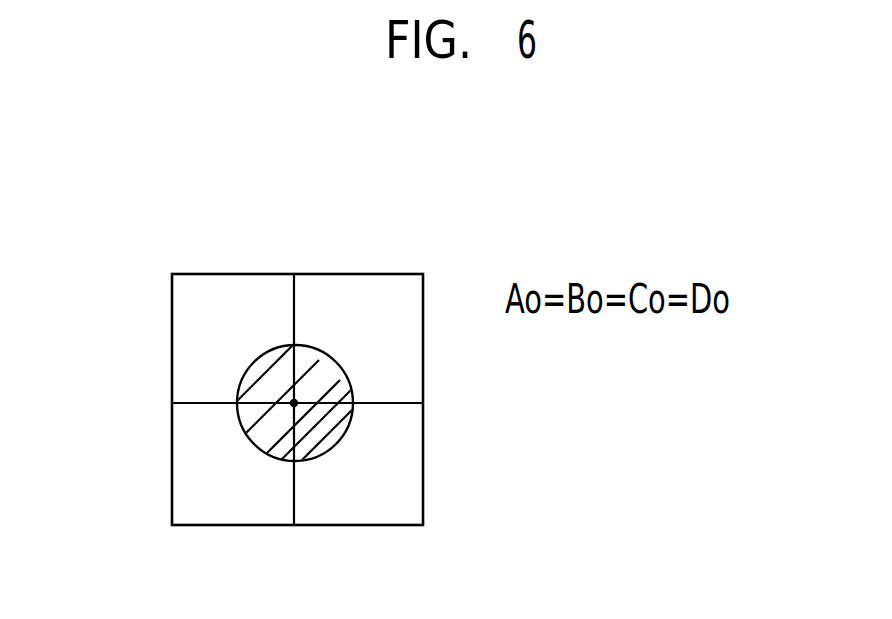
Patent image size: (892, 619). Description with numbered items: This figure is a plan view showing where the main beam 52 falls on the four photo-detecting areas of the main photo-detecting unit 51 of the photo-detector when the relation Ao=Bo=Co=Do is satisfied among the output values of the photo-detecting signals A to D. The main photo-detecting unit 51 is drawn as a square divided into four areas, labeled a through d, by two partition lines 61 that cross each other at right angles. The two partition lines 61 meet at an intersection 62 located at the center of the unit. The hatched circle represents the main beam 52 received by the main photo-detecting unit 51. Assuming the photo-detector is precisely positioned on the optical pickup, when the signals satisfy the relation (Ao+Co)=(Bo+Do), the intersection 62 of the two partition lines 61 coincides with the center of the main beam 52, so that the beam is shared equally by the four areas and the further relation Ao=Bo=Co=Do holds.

The main photo-detecting unit 51 is at (314, 200).
The main beam 52 is at (353, 425).
The partition lines 61 is at (293, 298).
The intersection 62 is at (294, 403).